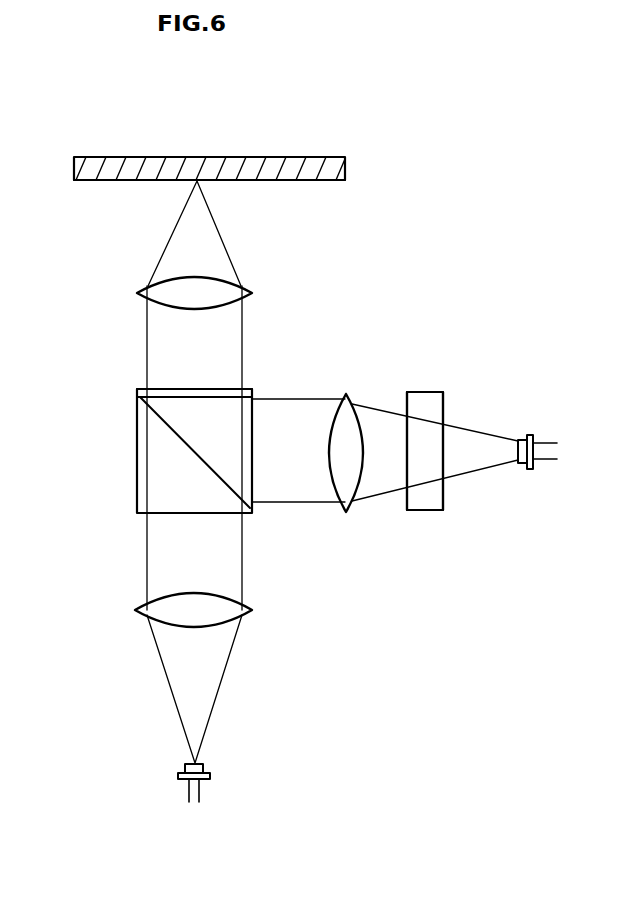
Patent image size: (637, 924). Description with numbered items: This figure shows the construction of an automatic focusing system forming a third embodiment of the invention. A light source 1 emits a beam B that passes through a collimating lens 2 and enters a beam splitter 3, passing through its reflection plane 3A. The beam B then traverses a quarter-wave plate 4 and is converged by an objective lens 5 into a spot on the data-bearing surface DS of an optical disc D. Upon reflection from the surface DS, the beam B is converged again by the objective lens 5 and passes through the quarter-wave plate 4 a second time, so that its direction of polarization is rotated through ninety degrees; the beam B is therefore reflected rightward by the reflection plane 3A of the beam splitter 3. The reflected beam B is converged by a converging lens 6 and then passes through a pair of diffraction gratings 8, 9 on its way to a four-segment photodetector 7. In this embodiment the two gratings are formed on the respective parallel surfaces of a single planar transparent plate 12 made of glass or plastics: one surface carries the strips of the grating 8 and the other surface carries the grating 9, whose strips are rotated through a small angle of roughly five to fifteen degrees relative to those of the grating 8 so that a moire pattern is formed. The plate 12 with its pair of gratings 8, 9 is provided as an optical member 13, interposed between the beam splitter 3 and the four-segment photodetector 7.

The light source (laser) 1 is at (204, 768).
The collimator lens 2 is at (252, 610).
The beam splitter 3 is at (137, 483).
The reflection plane 3A is at (164, 425).
The quarter-wave plate 4 is at (137, 391).
The objective lens 5 is at (252, 293).
The converging lens 6 is at (346, 514).
The four-segment photodetector 7 is at (520, 463).
The diffraction grating 8 is at (407, 404).
The diffraction grating 9 is at (445, 405).
The transparent plate 12 is at (422, 510).
The optical member 13 is at (425, 392).
The beam B is at (168, 691).
The optical disc D is at (280, 157).
The data-bearing surface DS is at (293, 181).